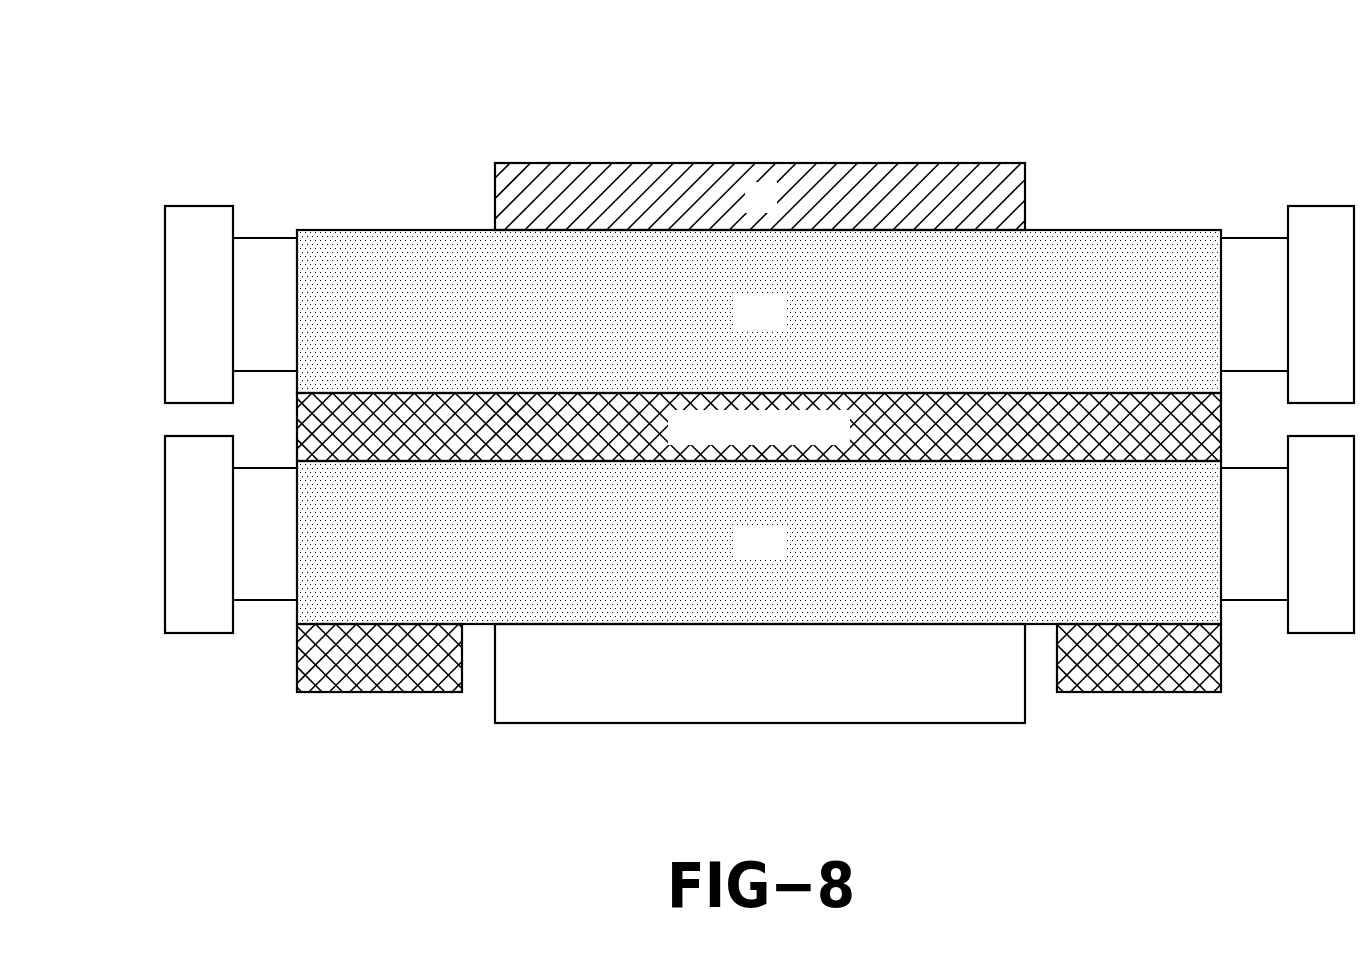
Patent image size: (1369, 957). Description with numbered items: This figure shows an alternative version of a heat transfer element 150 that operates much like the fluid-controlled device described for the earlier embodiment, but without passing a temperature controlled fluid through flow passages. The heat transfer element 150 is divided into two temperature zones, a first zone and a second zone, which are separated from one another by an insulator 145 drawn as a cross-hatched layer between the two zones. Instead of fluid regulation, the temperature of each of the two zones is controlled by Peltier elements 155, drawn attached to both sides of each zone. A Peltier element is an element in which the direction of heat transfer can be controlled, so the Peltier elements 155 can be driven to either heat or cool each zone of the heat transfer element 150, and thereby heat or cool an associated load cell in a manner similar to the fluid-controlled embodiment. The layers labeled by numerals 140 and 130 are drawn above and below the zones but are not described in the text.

The heat transfer element 150 is at (694, 416).
The Peltier elements 155 is at (262, 258).
The P layer 140 is at (572, 197).
The insulator 145 is at (417, 430).
The Z layer (substrate) 130 is at (949, 691).